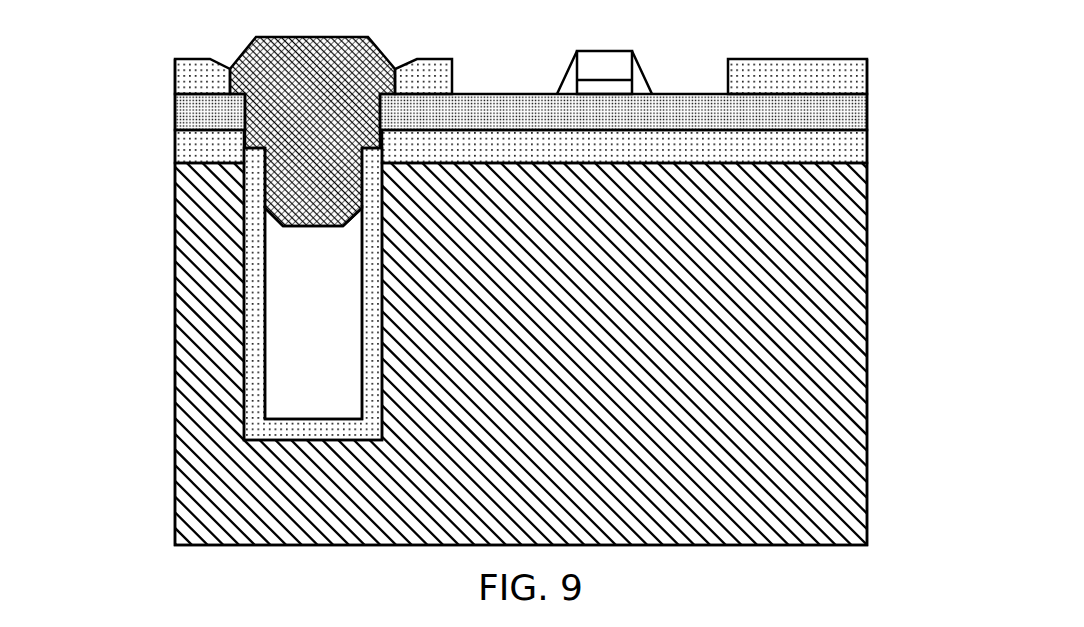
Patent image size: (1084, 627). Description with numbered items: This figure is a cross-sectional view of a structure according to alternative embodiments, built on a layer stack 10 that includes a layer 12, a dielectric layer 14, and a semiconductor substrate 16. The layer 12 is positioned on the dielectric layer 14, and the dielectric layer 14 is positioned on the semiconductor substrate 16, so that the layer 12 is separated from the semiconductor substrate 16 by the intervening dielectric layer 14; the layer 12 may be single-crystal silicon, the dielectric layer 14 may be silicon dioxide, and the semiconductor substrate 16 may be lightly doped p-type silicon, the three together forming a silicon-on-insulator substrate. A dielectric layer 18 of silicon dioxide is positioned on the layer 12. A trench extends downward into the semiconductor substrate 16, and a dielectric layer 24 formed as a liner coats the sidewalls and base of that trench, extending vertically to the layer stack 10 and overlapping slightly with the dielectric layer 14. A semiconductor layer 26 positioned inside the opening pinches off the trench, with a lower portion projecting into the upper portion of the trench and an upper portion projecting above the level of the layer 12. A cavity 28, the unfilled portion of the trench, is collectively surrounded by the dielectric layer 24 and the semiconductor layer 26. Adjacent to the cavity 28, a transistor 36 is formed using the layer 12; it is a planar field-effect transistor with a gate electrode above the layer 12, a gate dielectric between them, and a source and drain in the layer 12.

The layer stack 10 is at (152, 101).
The layer 12 is at (812, 110).
The dielectric layer 14 is at (815, 153).
The semiconductor substrate 16 is at (817, 473).
The dielectric layer 18 is at (815, 75).
The dielectric layer 24 is at (260, 232).
The semiconductor layer 26 is at (293, 57).
The cavity 28 is at (336, 339).
The transistor 36 is at (660, 48).